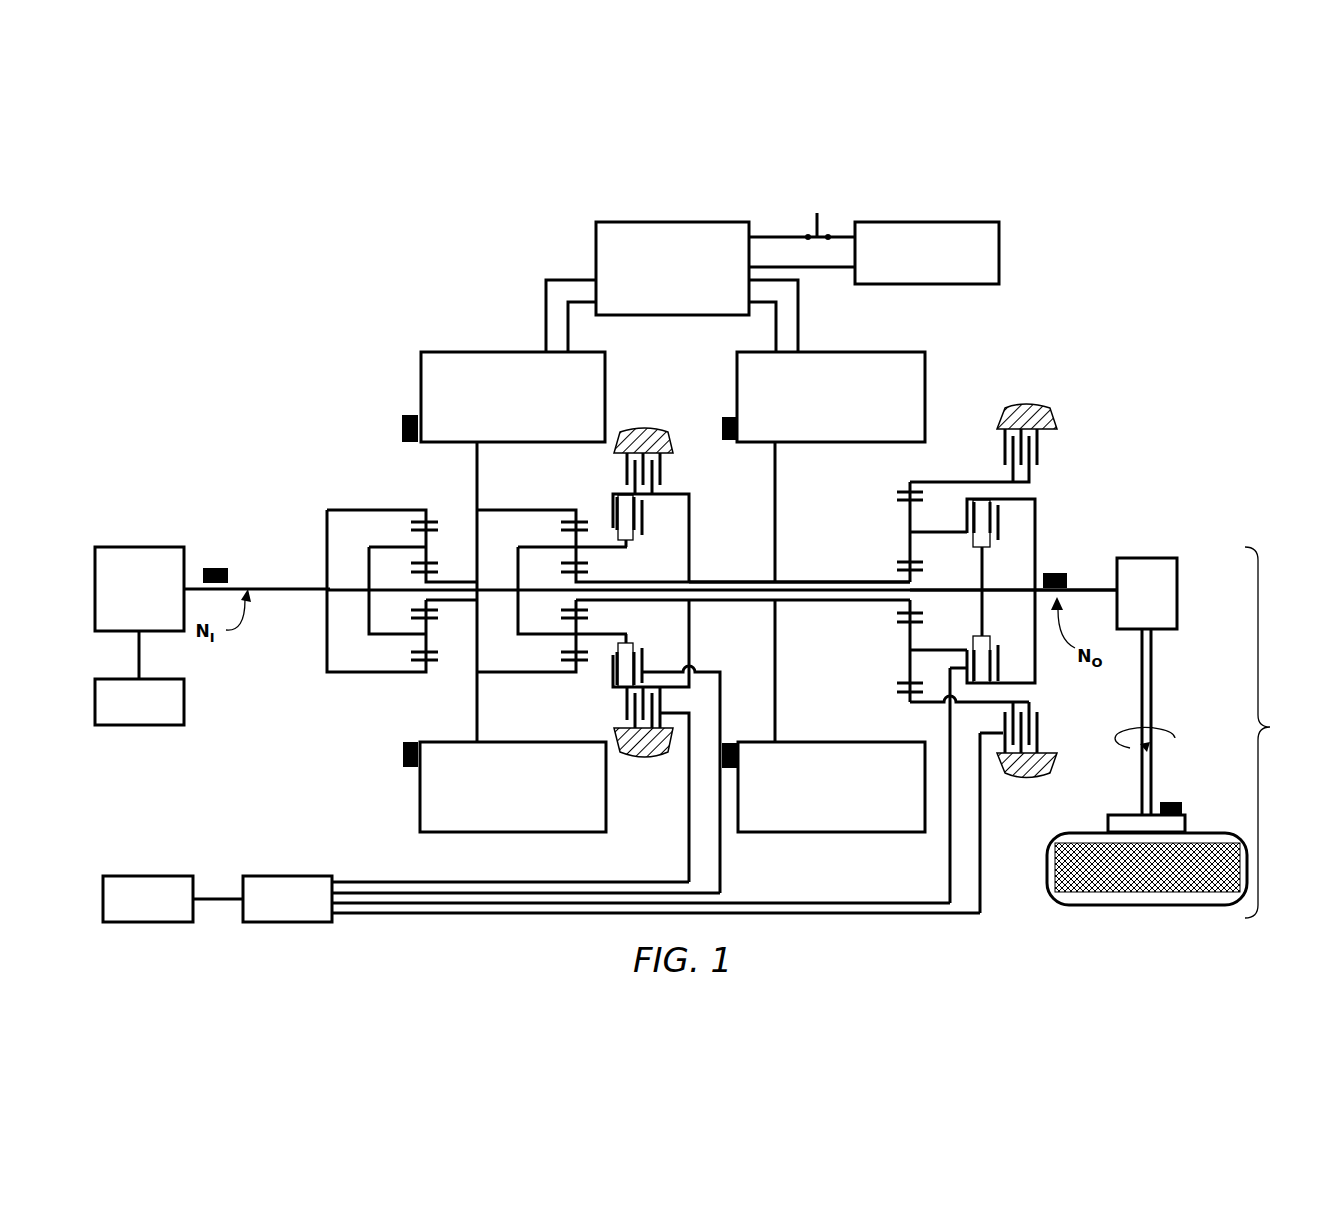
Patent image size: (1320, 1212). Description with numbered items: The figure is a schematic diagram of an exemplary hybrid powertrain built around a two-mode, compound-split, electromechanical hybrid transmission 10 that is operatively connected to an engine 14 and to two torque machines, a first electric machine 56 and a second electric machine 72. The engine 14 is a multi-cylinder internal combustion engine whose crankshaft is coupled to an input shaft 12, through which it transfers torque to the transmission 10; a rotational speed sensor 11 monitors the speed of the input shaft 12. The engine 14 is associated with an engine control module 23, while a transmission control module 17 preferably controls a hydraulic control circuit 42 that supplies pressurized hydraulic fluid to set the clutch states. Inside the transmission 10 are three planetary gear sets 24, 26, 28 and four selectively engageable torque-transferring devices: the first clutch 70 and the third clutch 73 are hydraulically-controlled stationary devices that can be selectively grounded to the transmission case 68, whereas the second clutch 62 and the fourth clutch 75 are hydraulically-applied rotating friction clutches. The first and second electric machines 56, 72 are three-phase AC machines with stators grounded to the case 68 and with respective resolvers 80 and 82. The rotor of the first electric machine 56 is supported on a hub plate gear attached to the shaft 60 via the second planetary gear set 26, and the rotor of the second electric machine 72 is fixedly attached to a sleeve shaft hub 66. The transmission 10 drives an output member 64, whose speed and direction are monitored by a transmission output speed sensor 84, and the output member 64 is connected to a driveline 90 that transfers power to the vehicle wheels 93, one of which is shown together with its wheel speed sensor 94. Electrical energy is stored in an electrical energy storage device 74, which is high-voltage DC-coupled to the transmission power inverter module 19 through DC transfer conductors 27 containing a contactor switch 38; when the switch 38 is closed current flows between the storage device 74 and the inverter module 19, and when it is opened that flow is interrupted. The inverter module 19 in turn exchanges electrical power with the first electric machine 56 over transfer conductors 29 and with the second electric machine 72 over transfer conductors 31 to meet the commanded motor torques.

The electromechanical hybrid transmission 10 is at (386, 318).
The rotational speed sensor 11 is at (213, 568).
The input shaft 12 is at (290, 587).
The engine 14 is at (144, 547).
The transmission control module 17 is at (140, 876).
The transmission power inverter module 19 is at (596, 235).
The engine control module 23 is at (184, 718).
The first planetary gear set 24 is at (417, 510).
The second planetary gear set 26 is at (570, 510).
The DC transfer conductors 27 is at (765, 236).
The third planetary gear set 28 is at (906, 482).
The transfer conductors 29 is at (546, 315).
The transfer conductors 31 is at (798, 312).
The contactor switch 38 is at (817, 215).
The hydraulic control circuit 42 is at (258, 876).
The first electric machine 56 is at (421, 385).
The shaft 60 is at (958, 588).
The clutch C2 62 is at (997, 540).
The output member 64 is at (1086, 588).
The sleeve shaft hub 66 is at (810, 582).
The transmission case 68 is at (643, 432).
The clutch C1 70 is at (995, 448).
The second electric machine 72 is at (925, 366).
The clutch C3 73 is at (665, 474).
The electrical energy storage device 74 is at (999, 241).
The clutch C4 75 is at (643, 522).
The resolver 80 is at (402, 428).
The resolver 82 is at (728, 417).
The transmission output speed sensor 84 is at (1055, 573).
The driveline 90 is at (1270, 727).
The vehicle wheel 93 is at (1108, 822).
The wheel speed sensor 94 is at (1172, 802).